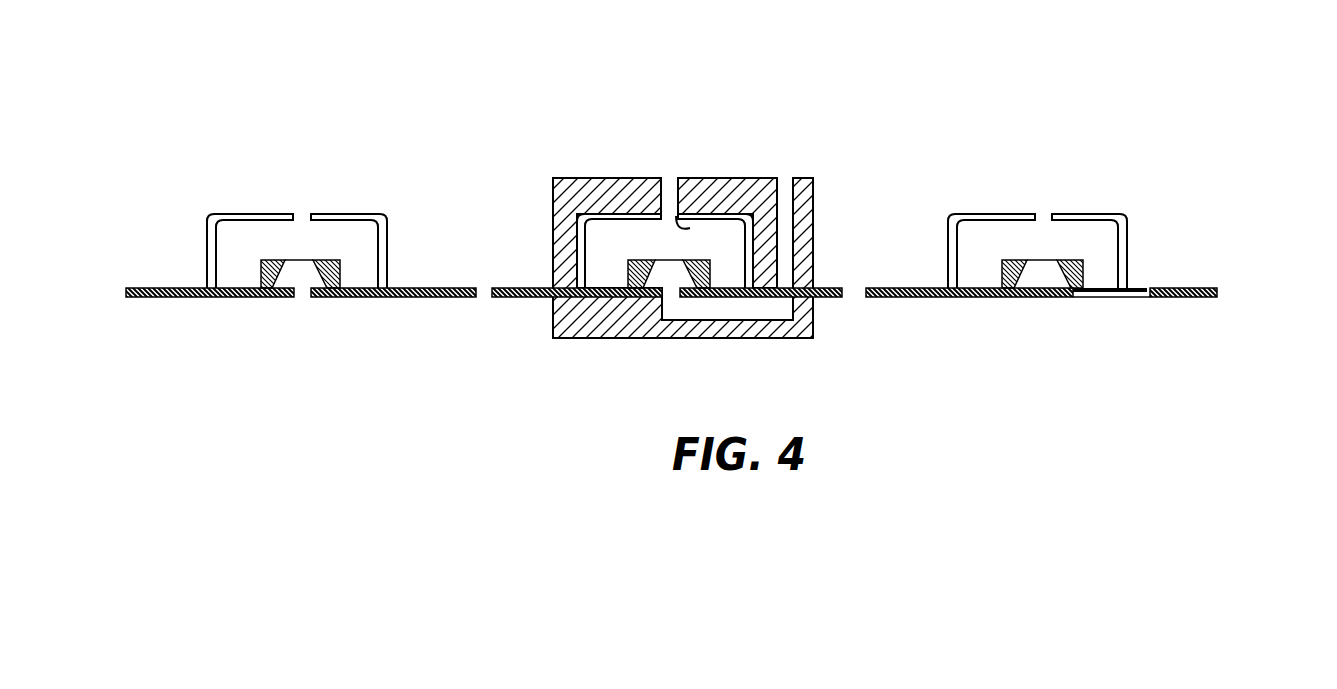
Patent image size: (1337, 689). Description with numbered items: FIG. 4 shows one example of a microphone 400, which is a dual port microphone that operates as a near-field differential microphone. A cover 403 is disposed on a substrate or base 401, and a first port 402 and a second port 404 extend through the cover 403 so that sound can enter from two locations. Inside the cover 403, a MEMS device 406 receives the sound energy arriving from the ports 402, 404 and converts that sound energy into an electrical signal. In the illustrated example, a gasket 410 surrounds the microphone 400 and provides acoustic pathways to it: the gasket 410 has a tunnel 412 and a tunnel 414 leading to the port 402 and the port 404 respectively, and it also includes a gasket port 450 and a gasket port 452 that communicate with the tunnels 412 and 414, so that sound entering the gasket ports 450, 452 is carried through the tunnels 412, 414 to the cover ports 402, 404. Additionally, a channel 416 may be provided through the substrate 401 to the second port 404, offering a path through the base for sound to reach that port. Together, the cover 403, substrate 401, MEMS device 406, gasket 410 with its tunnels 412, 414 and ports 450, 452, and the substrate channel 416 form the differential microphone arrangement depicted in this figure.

The microphone 400 is at (357, 84).
The substrate or base 401 is at (143, 298).
The first port 402 is at (747, 130).
The cover 403 is at (207, 228).
The second port 404 is at (308, 302).
The MEMS device 406 is at (278, 276).
The gasket 410 is at (580, 203).
The tunnel 412 is at (670, 188).
The tunnel 414 is at (790, 243).
The channel 416 is at (1152, 282).
The gasket port 450 is at (666, 173).
The gasket port 452 is at (786, 174).